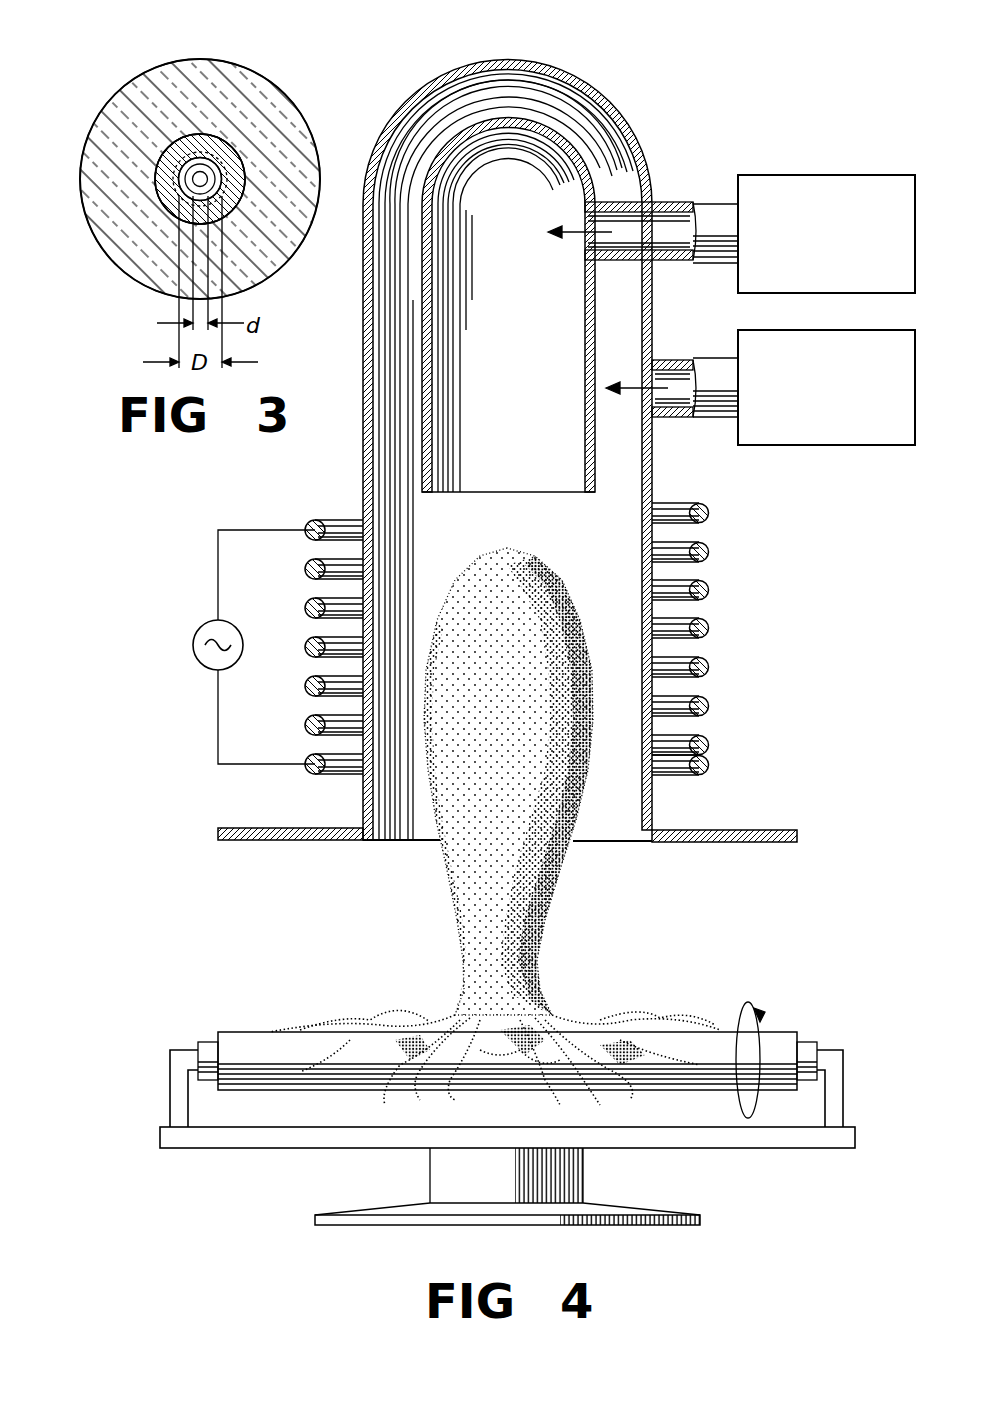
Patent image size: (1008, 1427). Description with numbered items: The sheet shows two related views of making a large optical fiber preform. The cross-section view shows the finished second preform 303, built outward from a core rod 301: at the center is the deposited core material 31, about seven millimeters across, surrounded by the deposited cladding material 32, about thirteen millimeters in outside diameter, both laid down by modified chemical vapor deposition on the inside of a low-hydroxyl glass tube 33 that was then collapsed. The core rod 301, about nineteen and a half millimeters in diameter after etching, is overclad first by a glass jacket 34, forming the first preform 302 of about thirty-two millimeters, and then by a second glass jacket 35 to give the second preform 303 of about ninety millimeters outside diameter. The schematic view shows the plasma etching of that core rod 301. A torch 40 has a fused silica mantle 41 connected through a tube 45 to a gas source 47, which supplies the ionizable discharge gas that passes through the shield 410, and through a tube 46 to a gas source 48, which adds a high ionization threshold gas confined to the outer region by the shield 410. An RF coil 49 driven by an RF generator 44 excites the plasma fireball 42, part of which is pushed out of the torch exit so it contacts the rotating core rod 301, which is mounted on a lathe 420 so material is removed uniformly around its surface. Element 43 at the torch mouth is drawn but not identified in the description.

In FIG. 3, the deposited core material 31 is at (196, 181).
In FIG. 3, the deposited cladding material 32 is at (190, 175).
In FIG. 3, the glass tube 33 is at (195, 168).
In FIG. 3, the glass jacket 34 is at (222, 156).
In FIG. 3, the glass jacket 35 is at (277, 152).
In FIG. 3, the core rod 301 is at (226, 187).
In FIG. 4, the core rod 301 is at (238, 1034).
In FIG. 3, the first preform 302 is at (165, 206).
In FIG. 3, the second preform 303 is at (88, 224).
In FIG. 4, the torch 40 is at (432, 48).
In FIG. 4, the fused silica mantle 41 is at (546, 66).
In FIG. 4, the shield 410 is at (560, 135).
In FIG. 4, the plasma fireball 42 is at (496, 566).
In FIG. 4, the base plate 43 is at (610, 822).
In FIG. 4, the RF generator 44 is at (203, 630).
In FIG. 4, the tube 45 is at (724, 205).
In FIG. 4, the tube 46 is at (724, 359).
In FIG. 4, the gas source 47 is at (750, 174).
In FIG. 4, the gas source 48 is at (750, 329).
In FIG. 4, the RF coil 49 is at (335, 523).
In FIG. 4, the lathe 420 is at (238, 1142).